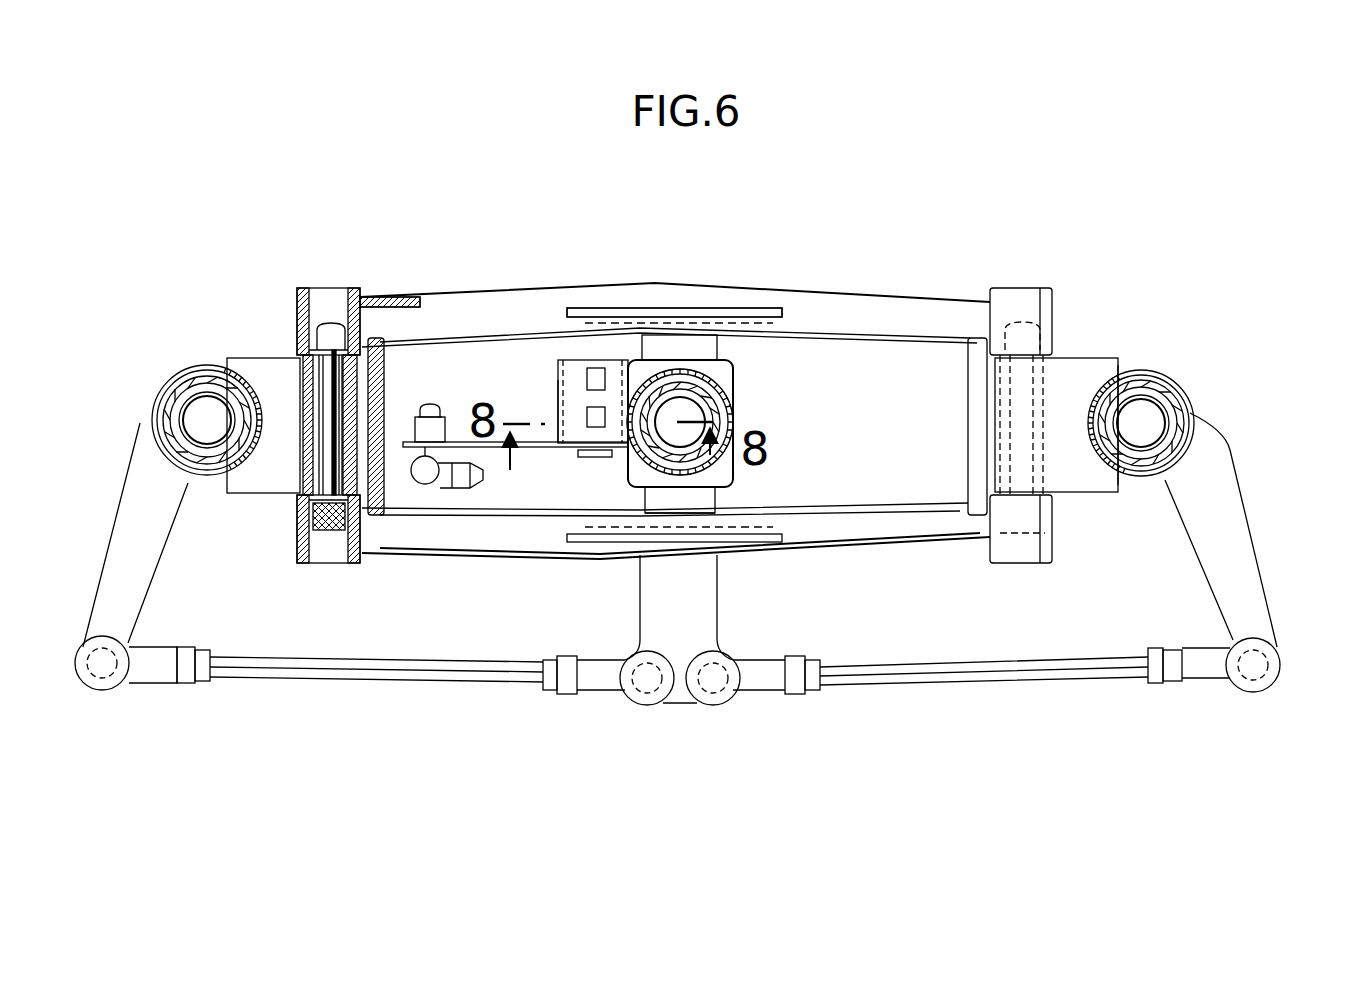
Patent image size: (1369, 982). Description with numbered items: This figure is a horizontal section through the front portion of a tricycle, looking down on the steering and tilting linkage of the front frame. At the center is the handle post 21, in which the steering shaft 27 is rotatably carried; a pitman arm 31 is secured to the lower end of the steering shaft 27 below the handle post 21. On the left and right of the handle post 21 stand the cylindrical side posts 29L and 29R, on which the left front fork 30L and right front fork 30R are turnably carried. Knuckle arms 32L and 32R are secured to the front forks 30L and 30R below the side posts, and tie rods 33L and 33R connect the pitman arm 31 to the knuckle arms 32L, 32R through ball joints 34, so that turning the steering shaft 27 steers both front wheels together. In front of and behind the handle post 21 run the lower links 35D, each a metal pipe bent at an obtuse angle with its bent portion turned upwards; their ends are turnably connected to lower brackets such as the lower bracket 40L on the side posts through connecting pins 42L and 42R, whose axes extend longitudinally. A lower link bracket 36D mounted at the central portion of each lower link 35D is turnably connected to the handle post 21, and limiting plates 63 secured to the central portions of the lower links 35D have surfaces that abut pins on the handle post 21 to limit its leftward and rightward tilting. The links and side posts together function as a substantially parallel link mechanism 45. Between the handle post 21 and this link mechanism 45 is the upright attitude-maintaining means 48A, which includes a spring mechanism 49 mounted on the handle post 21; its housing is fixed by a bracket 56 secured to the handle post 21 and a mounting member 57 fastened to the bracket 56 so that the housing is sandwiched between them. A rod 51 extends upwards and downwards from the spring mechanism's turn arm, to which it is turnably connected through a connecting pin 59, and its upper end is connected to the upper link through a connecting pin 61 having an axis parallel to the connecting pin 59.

The handle post 21 is at (728, 405).
The steering shaft 27 is at (727, 373).
The right side post 29R is at (160, 403).
The left side post 29L is at (1180, 390).
The right front fork 30R is at (302, 397).
The left front fork 30L is at (1118, 360).
The pitman arm 31 is at (718, 612).
The right knuckle arm 32R is at (157, 527).
The left knuckle arm 32L is at (1237, 540).
The tie rod 33R is at (475, 680).
The tie rod 33L is at (970, 683).
The ball joint 34 is at (125, 670).
The lower link 35D is at (805, 303).
The lower link bracket 36D is at (602, 317).
The lower bracket 40L is at (1075, 483).
The connecting pin 42R is at (323, 405).
The connecting pin 42L is at (1037, 397).
The parallel link mechanism 45 is at (383, 293).
The upright attitude-maintaining means 48A is at (548, 388).
The spring mechanism 49 is at (592, 468).
The rod 51 is at (417, 483).
The bracket 56 is at (652, 368).
The mounting member 57 is at (570, 402).
The connecting pin 59 is at (423, 413).
The connecting pin 61 is at (703, 567).
The limiting plate 63 is at (770, 310).